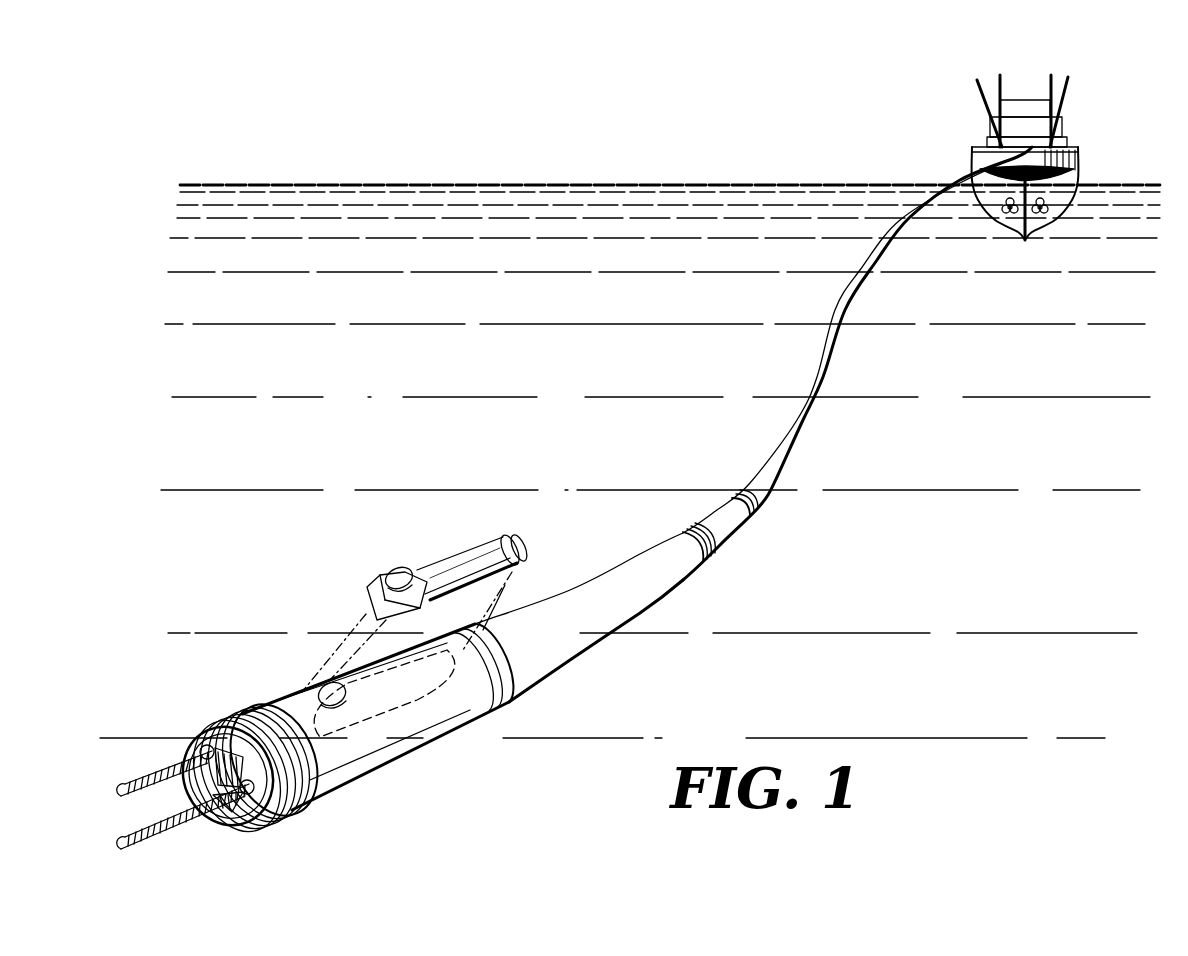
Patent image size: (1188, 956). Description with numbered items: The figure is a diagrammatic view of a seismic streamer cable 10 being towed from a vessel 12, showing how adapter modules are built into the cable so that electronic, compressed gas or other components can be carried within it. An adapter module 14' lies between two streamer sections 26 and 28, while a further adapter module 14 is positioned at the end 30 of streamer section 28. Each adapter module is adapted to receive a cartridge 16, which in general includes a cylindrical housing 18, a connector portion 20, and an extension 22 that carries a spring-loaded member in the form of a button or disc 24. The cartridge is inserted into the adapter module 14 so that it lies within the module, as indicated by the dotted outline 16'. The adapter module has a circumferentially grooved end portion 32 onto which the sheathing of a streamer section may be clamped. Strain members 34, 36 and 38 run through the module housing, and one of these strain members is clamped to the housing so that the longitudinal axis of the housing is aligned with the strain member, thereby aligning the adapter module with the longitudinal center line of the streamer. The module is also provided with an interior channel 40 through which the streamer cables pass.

The streamer cable 10 is at (853, 306).
The vessel 12 is at (1082, 160).
The adapter module 14 is at (340, 705).
The adapter module 14' is at (682, 528).
The cartridge 16 is at (470, 544).
The dotted outline of cartridge 16' is at (403, 701).
The cylindrical housing 18 is at (512, 578).
The connector portion 20 is at (528, 552).
The extension 22 is at (368, 596).
The spring-loaded button or disc 24 is at (404, 570).
The streamer section 26 is at (758, 500).
The streamer section 28 is at (677, 575).
The end of streamer section 30 is at (504, 697).
The circumferentially grooved end portion 32 is at (240, 717).
The strain member 34 is at (142, 778).
The strain member 36 is at (180, 824).
The strain member 38 is at (147, 828).
The interior channel 40 is at (207, 778).